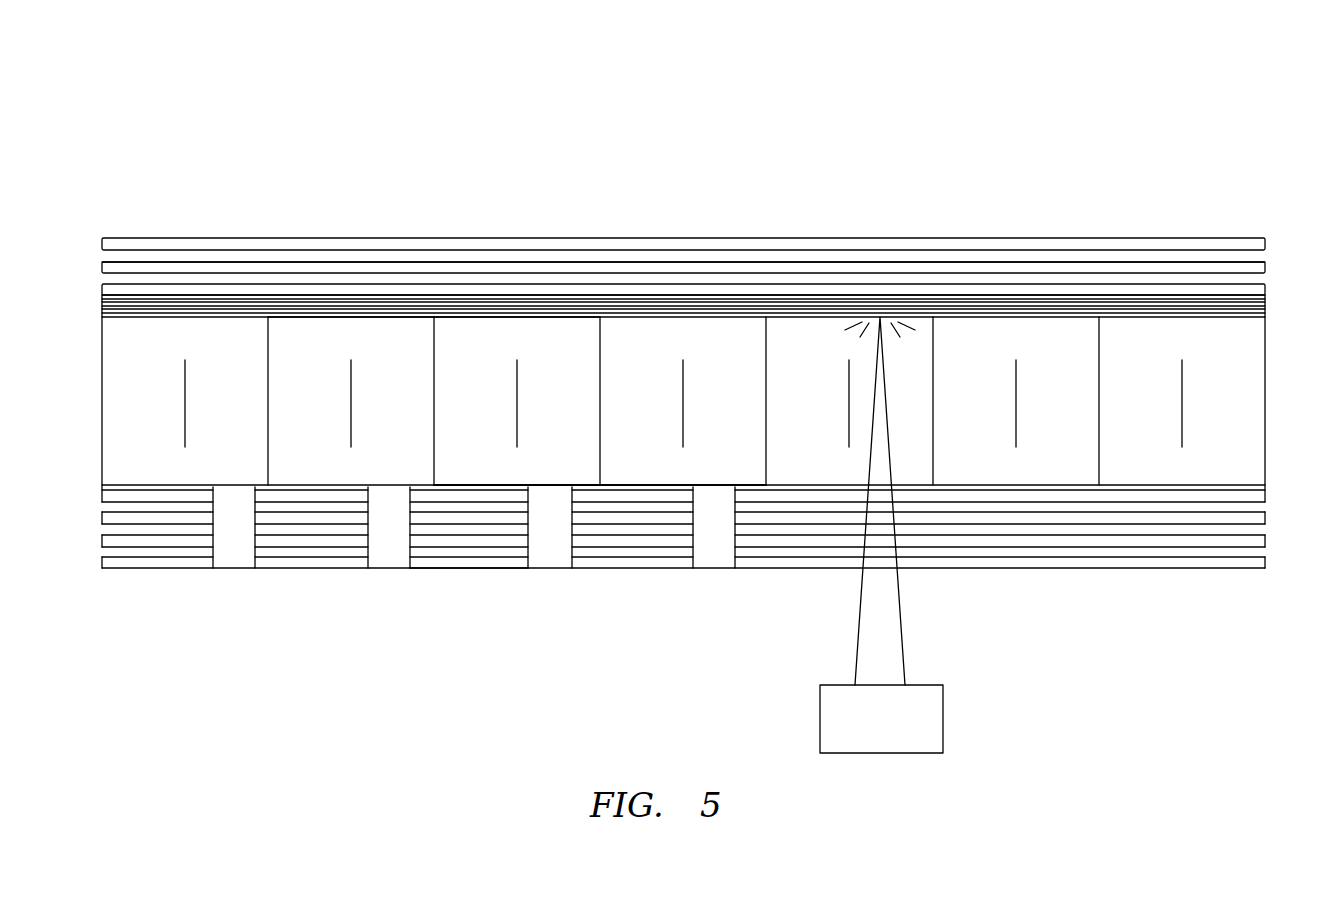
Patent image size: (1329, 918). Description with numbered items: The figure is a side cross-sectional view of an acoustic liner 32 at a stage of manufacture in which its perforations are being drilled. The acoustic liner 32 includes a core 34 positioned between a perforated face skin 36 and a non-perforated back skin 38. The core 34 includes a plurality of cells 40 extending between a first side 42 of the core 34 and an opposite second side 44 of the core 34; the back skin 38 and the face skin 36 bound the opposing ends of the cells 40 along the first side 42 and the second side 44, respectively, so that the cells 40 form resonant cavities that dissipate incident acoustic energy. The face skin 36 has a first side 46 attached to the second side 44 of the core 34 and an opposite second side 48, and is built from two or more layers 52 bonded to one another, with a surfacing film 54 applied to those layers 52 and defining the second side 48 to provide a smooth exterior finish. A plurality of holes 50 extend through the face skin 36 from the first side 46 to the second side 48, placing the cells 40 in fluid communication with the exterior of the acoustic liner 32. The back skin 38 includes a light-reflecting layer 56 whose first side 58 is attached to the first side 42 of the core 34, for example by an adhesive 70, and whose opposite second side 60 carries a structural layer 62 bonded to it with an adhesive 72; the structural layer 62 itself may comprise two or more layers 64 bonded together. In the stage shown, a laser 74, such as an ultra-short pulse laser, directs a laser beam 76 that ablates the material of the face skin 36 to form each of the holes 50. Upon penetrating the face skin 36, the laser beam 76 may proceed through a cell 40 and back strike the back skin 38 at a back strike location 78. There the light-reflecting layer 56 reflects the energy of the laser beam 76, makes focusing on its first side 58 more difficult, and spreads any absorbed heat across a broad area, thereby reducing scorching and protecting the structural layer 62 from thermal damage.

The acoustic liner 32 is at (686, 389).
The core 34 is at (643, 337).
The perforated face skin 36 is at (995, 592).
The non-perforated back skin 38 is at (1056, 222).
The cells 40 is at (630, 472).
The first side of the core 42 is at (455, 320).
The second side of the core 44 is at (583, 485).
The first side of the face skin 46 is at (463, 490).
The second side of the face skin 48 is at (478, 570).
The holes 50 is at (228, 552).
The layers of the face skin 52 is at (97, 490).
The surfacing film 54 is at (308, 568).
The light-reflecting layer 56 is at (1278, 304).
The first side of the light-reflecting layer 58 is at (515, 312).
The second side of the light-reflecting layer 60 is at (550, 305).
The structural layer 62 is at (318, 264).
The layers of the structural layer 64 is at (97, 238).
The adhesive 70 is at (290, 320).
The adhesive 72 is at (388, 300).
The laser 74 is at (866, 732).
The laser beam 76 is at (878, 366).
The back strike location 78 is at (861, 338).